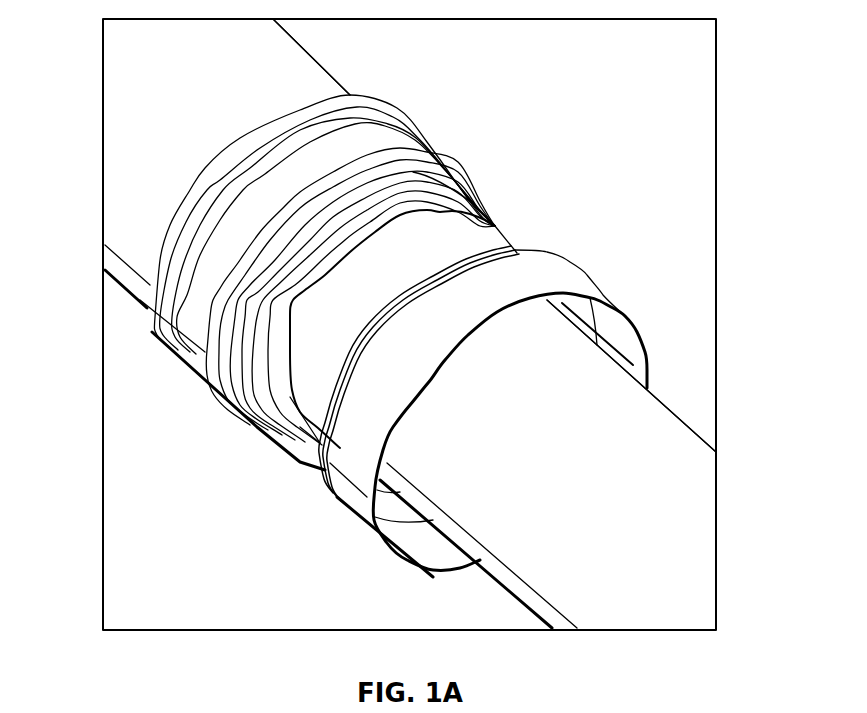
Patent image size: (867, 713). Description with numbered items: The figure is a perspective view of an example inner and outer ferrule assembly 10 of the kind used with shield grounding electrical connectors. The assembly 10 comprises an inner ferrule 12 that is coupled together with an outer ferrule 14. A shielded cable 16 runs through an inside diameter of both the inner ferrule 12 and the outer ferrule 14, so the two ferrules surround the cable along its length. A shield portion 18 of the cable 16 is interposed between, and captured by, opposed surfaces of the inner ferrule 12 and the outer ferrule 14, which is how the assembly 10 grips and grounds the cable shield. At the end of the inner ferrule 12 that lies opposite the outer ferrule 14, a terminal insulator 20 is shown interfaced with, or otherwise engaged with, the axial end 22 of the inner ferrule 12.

The inner and outer ferrule assembly 10 is at (556, 120).
The inner ferrule 12 is at (200, 316).
The outer ferrule 14 is at (313, 384).
The shielded cable 16 is at (660, 452).
The shield portion 18 is at (430, 165).
The terminal insulator 20 is at (296, 67).
The axial end 22 is at (180, 297).